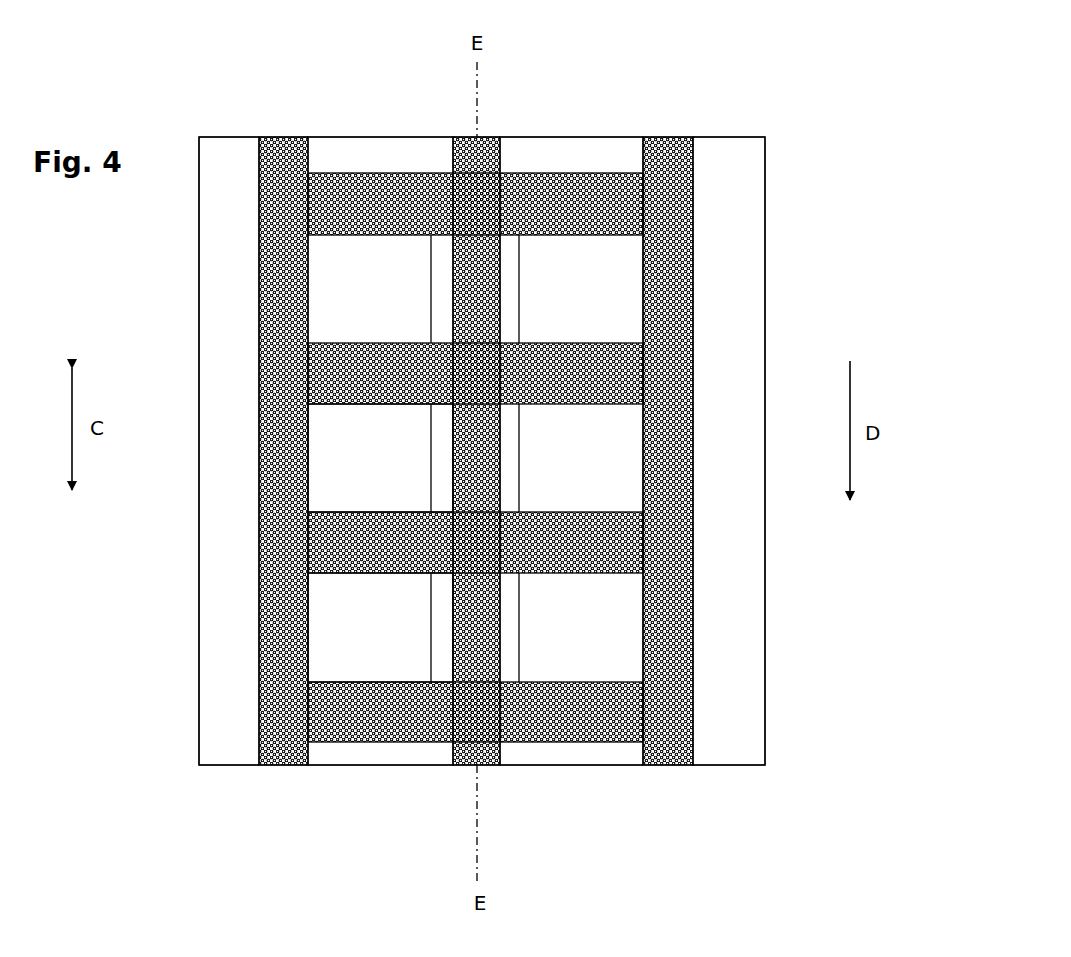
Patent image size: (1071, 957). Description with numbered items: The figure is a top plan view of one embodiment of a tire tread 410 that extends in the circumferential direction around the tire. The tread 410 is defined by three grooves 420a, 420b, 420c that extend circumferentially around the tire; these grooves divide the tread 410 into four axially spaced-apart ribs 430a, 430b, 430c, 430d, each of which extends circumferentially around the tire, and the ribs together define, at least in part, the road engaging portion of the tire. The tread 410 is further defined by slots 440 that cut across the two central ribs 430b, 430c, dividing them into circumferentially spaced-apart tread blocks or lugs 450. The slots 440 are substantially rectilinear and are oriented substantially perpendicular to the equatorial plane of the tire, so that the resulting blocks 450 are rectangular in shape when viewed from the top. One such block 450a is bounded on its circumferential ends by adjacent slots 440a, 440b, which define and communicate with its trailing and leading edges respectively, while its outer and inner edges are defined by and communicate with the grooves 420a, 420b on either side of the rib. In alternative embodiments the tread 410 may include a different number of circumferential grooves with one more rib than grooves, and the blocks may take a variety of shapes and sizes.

The tire tread 410 is at (682, 96).
The groove 420a is at (285, 765).
The groove 420b is at (488, 758).
The groove 420c is at (670, 758).
The rib 430a is at (218, 750).
The rib 430b is at (401, 757).
The rib 430c is at (597, 758).
The rib 430d is at (752, 755).
The slot 440 is at (408, 390).
The slot 440a is at (427, 561).
The slot 440b is at (418, 726).
The tread block 450 is at (410, 481).
The block 450a is at (405, 641).